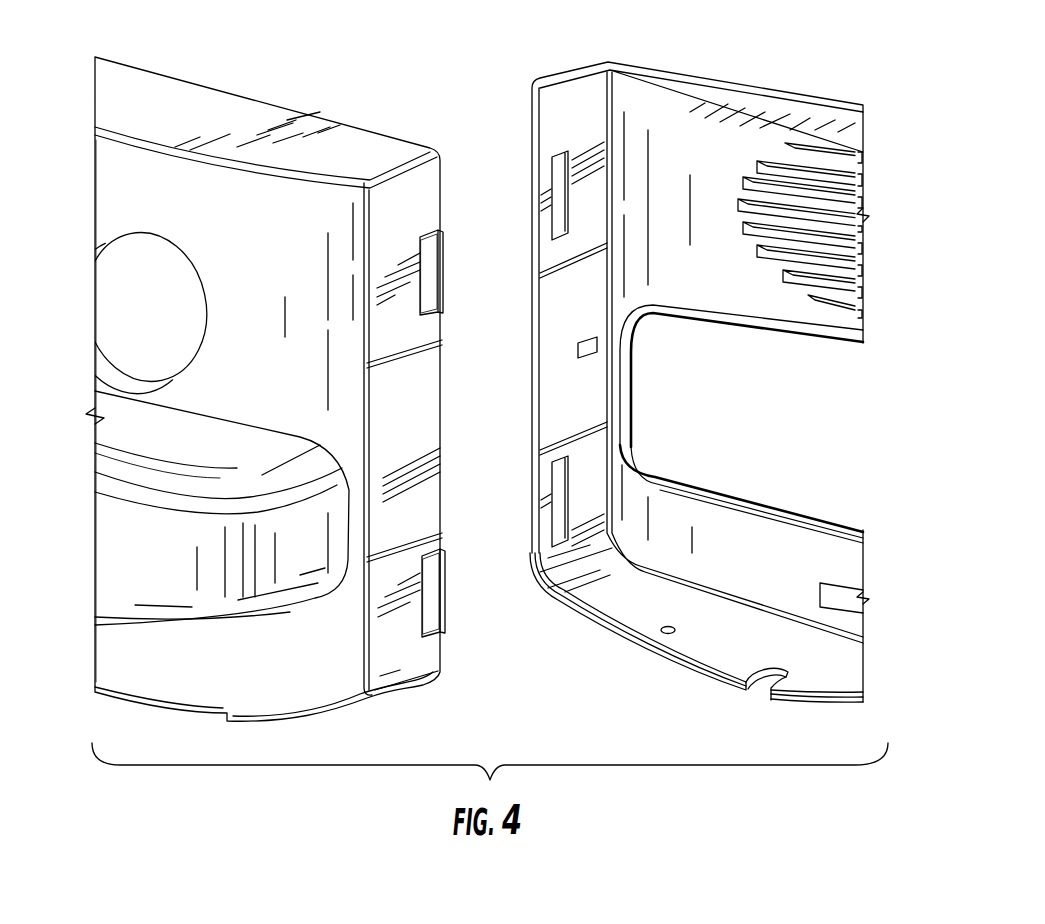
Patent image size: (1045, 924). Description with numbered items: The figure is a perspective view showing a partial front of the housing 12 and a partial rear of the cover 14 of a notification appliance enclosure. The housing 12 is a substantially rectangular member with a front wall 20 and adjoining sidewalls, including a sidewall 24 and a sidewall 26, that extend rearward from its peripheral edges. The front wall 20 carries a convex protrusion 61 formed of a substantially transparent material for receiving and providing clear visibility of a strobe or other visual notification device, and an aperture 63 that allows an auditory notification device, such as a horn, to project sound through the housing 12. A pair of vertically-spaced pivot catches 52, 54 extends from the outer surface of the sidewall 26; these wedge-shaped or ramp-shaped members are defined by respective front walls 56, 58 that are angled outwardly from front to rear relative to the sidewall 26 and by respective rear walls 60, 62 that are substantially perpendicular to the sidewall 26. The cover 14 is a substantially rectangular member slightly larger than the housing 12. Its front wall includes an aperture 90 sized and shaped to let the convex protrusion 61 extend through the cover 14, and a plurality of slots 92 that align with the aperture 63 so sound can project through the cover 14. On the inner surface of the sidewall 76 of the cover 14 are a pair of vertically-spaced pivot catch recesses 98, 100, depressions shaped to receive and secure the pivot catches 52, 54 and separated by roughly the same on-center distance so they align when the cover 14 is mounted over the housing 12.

The housing 12 is at (191, 83).
The cover 14 is at (647, 63).
The front wall 20 is at (310, 227).
The sidewall 24 is at (270, 133).
The sidewall 26 is at (405, 430).
The pivot catch 52 is at (450, 272).
The pivot catch 54 is at (450, 598).
The front wall 56 is at (429, 293).
The front wall 58 is at (428, 615).
The rear wall 60 is at (443, 231).
The convex protrusion 61 is at (143, 563).
The rear wall 62 is at (443, 556).
The aperture 63 is at (167, 330).
The sidewall 76 is at (573, 125).
The aperture 90 is at (773, 433).
The slots 92 is at (808, 168).
The pivot catch recess 98 is at (555, 183).
The pivot catch recess 100 is at (555, 505).